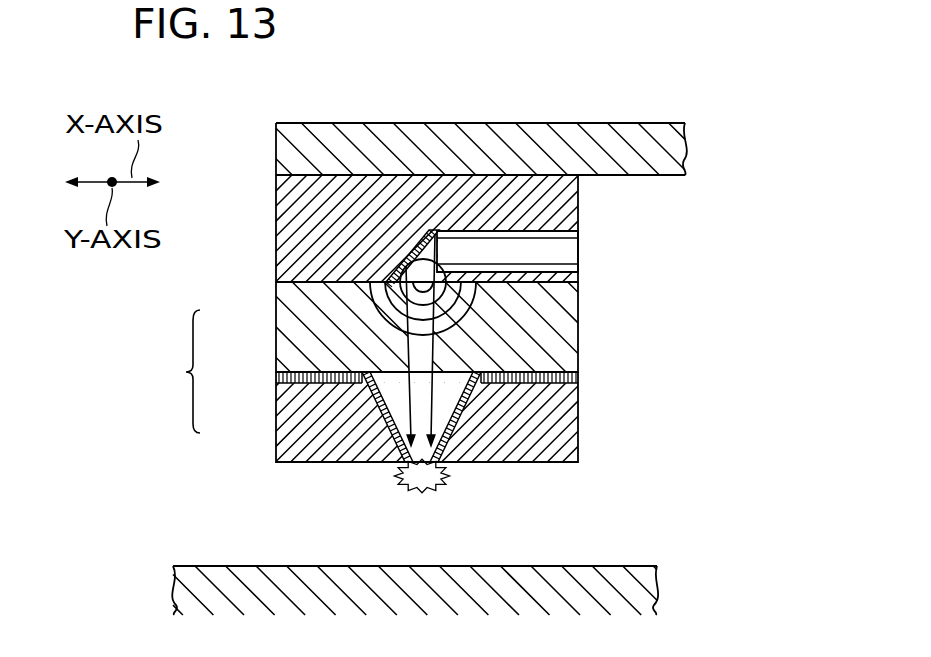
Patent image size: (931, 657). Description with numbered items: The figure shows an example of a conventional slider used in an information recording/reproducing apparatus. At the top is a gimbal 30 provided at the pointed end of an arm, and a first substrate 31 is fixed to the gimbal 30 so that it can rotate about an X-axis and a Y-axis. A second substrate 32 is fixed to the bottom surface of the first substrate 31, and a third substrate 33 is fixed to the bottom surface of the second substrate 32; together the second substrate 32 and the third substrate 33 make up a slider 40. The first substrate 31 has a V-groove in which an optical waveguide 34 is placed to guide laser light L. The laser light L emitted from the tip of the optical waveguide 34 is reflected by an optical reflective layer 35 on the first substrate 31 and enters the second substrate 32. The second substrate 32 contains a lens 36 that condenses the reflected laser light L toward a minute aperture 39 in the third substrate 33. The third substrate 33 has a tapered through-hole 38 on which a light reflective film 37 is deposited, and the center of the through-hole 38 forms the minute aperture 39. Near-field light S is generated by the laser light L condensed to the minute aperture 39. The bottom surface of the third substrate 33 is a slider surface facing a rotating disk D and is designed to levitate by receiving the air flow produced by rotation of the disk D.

The gimbal 30 is at (633, 135).
The first substrate 31 is at (276, 228).
The second substrate 32 is at (276, 333).
The third substrate 33 is at (276, 423).
The optical waveguide 34 is at (572, 250).
The optical reflective layer 35 is at (399, 264).
The lens 36 is at (373, 305).
The light reflective film 37 is at (572, 378).
The through-hole 38 is at (478, 420).
The minute aperture 39 is at (417, 488).
The slider 40 is at (403, 396).
The laser light L is at (428, 412).
The near-field light S is at (438, 487).
The disk D is at (657, 592).